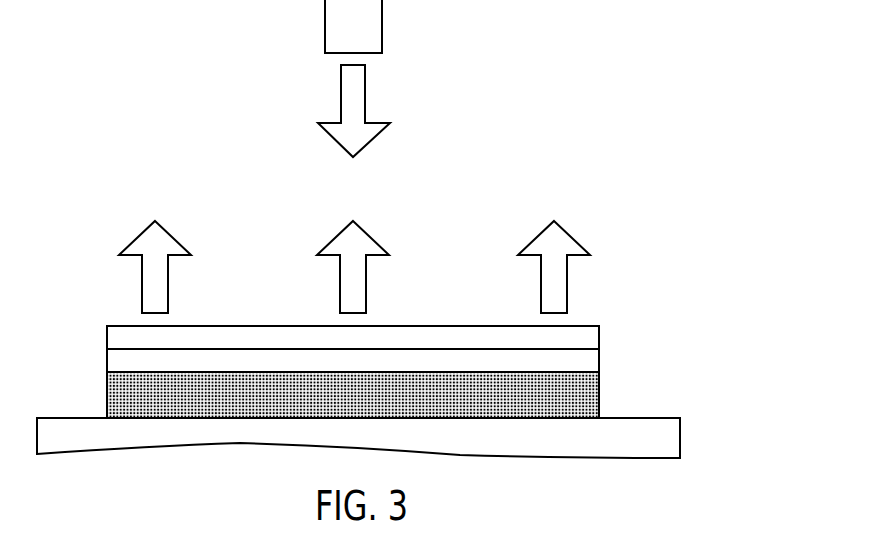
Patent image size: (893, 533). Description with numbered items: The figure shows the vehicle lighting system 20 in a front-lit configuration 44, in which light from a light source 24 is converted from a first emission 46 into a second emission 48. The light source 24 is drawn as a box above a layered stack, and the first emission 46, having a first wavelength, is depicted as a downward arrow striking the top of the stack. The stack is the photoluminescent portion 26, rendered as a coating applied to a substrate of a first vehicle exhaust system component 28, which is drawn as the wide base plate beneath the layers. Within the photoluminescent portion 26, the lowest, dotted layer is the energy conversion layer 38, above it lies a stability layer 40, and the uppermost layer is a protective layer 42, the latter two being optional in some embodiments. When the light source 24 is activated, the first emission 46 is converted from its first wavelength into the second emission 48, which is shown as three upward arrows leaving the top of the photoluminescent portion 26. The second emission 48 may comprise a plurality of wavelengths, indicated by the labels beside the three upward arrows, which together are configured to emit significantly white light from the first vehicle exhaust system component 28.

The lighting system 20 is at (127, 88).
The light source 24 is at (340, 34).
The photoluminescent portion 26 is at (100, 359).
The first vehicle exhaust system component 28 is at (663, 438).
The energy conversion layer 38 is at (592, 400).
The stability layer 40 is at (592, 358).
The protective layer 42 is at (592, 338).
The front-lit configuration 44 is at (467, 140).
The first emission 46 is at (342, 88).
The second emission 48 is at (178, 240).